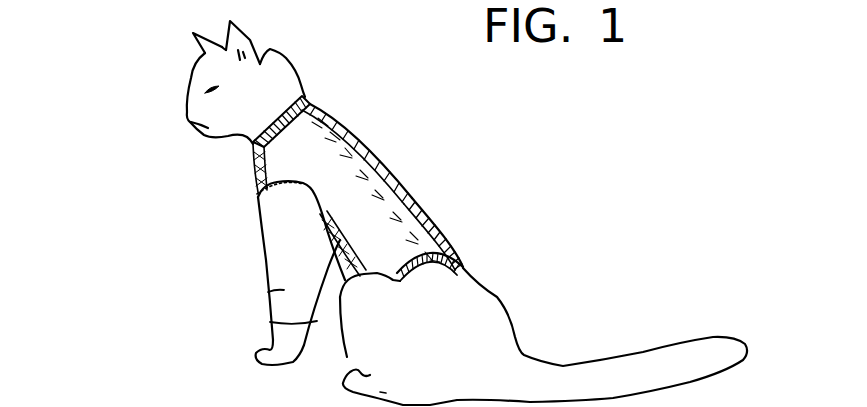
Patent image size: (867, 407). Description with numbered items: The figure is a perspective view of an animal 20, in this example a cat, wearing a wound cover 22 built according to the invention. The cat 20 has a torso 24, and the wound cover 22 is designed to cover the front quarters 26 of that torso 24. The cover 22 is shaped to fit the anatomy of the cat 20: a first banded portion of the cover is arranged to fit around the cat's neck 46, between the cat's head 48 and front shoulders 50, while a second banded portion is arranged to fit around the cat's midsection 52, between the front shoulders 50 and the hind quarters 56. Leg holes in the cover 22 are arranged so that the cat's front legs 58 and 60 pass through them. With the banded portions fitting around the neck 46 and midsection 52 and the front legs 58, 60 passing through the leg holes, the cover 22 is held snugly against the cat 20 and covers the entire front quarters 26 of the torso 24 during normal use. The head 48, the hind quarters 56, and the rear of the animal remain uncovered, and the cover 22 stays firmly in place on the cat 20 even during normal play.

The animal 20 is at (339, 154).
The wound cover 22 is at (355, 128).
The torso 24 is at (413, 180).
The front quarters 26 is at (241, 189).
The neck 46 is at (305, 95).
The head 48 is at (192, 73).
The front shoulders 50 is at (242, 273).
The midsection 52 is at (452, 226).
The hind quarters 56 is at (498, 283).
The front leg 58 is at (268, 292).
The front leg 60 is at (270, 322).